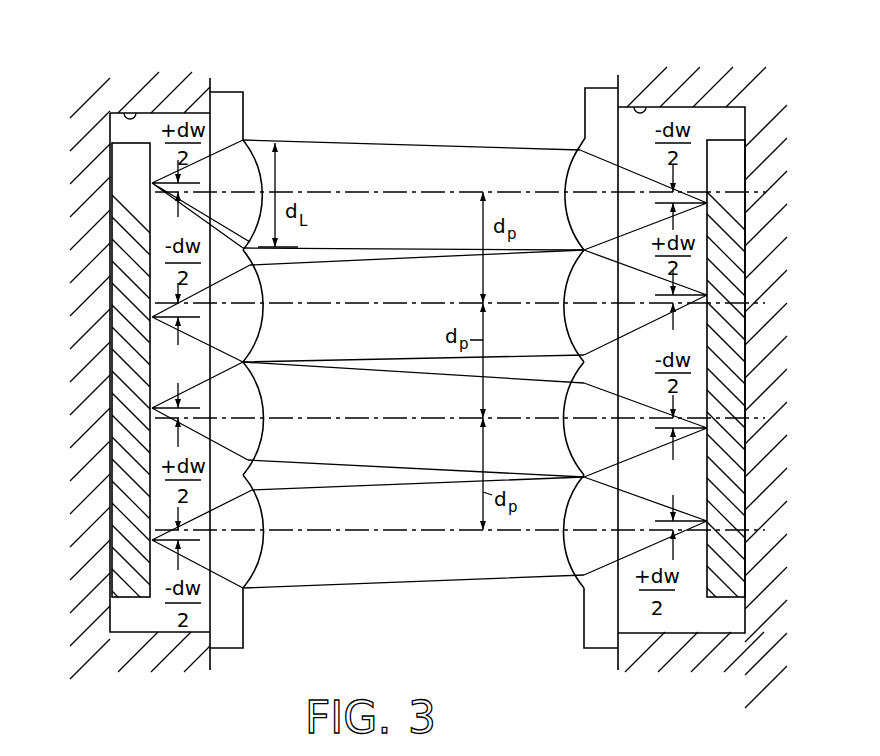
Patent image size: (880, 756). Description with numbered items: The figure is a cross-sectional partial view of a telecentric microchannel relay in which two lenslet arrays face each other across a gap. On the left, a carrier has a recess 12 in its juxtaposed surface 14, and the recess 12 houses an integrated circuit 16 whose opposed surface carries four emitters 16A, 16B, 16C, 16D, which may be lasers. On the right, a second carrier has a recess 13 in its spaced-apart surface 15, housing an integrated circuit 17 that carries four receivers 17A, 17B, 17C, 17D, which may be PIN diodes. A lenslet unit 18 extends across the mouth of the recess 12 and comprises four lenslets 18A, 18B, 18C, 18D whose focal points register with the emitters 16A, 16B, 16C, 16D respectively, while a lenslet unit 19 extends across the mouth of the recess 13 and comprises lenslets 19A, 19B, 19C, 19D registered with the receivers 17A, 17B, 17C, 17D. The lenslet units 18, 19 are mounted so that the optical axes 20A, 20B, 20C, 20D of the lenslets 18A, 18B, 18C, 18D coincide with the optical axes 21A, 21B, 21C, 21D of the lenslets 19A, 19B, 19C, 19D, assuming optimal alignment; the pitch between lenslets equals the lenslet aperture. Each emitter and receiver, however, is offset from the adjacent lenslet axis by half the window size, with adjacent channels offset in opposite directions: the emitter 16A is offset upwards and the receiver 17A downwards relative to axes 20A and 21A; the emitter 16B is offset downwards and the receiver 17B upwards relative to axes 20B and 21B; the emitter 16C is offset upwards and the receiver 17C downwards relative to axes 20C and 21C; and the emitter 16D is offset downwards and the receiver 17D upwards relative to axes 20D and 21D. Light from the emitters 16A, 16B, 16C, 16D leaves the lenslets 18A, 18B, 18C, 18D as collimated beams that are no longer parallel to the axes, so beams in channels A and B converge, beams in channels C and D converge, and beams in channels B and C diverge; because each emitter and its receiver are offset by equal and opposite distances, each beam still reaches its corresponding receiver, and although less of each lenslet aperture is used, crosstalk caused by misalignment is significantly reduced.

The recess 12 is at (128, 110).
The recess 13 is at (660, 103).
The juxtaposed surface 14 is at (160, 87).
The juxtaposed surface 15 is at (637, 80).
The integrated circuit 16 is at (110, 231).
The emitter 16A is at (152, 183).
The emitter 16B is at (152, 317).
The emitter 16C is at (152, 408).
The emitter 16D is at (152, 540).
The integrated circuit 17 is at (745, 128).
The receiver 17A is at (707, 203).
The receiver 17B is at (707, 295).
The receiver 17C is at (707, 428).
The receiver 17D is at (707, 521).
The lenslet unit 18 is at (247, 110).
The lenslet 18A is at (253, 150).
The lenslet 18B is at (264, 318).
The lenslet 18C is at (260, 430).
The lenslet 18D is at (260, 548).
The lenslet unit 19 is at (585, 107).
The lenslet 19A is at (562, 168).
The lenslet 19B is at (566, 306).
The lenslet 19C is at (563, 430).
The lenslet 19D is at (563, 545).
The optical axis 20A is at (460, 195).
The optical axis 20B is at (460, 306).
The optical axis 20C is at (460, 419).
The optical axis 20D is at (460, 532).
The optical axis 21A is at (458, 190).
The optical axis 21B is at (446, 302).
The optical axis 21C is at (447, 418).
The optical axis 21D is at (452, 530).